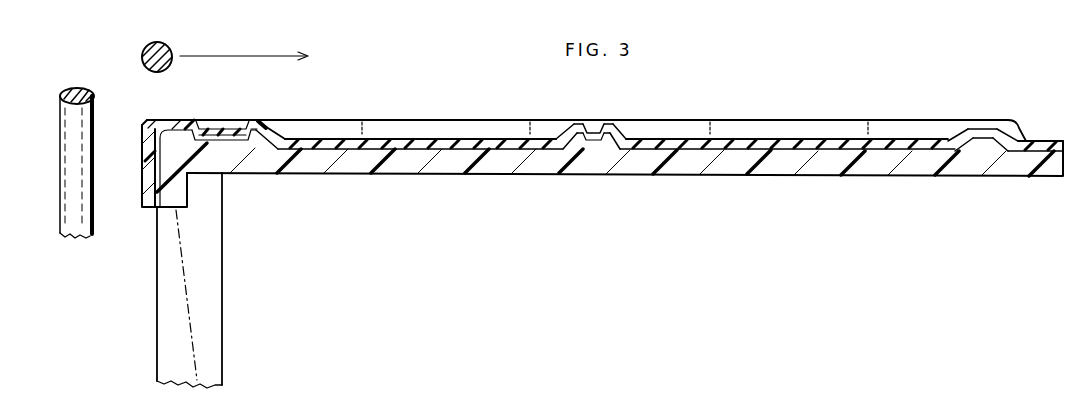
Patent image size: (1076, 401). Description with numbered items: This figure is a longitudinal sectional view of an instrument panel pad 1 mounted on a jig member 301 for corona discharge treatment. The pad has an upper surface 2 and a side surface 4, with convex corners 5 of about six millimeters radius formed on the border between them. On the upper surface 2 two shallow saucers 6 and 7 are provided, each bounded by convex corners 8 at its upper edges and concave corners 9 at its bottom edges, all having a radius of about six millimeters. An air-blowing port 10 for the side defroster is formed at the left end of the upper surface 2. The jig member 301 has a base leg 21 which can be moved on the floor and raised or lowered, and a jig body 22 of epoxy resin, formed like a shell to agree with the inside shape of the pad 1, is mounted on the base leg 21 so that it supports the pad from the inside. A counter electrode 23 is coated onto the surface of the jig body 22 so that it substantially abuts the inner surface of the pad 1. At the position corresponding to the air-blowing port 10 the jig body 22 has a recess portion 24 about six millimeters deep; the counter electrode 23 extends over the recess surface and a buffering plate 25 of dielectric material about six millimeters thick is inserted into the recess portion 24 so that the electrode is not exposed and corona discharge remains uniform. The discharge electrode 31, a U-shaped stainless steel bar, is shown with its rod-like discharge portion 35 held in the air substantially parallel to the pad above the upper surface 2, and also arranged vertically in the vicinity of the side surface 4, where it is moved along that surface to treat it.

The instrument panel pad 1 is at (387, 117).
The upper surface 2 is at (591, 130).
The side surface 4 is at (142, 165).
The convex corners 5 is at (150, 120).
The shallow saucer 6 is at (440, 137).
The shallow saucer 7 is at (749, 138).
The convex corners 8 is at (266, 121).
The concave corners 9 is at (289, 138).
The air-blowing port 10 is at (239, 130).
The base leg 21 is at (157, 291).
The jig body 22 is at (462, 175).
The counter electrode 23 is at (526, 151).
The recess portions 24 is at (205, 128).
The buffering plates 25 is at (216, 130).
The discharge electrode 31 is at (143, 56).
The discharge portion 35 is at (152, 70).
The jig member 301 is at (120, 338).